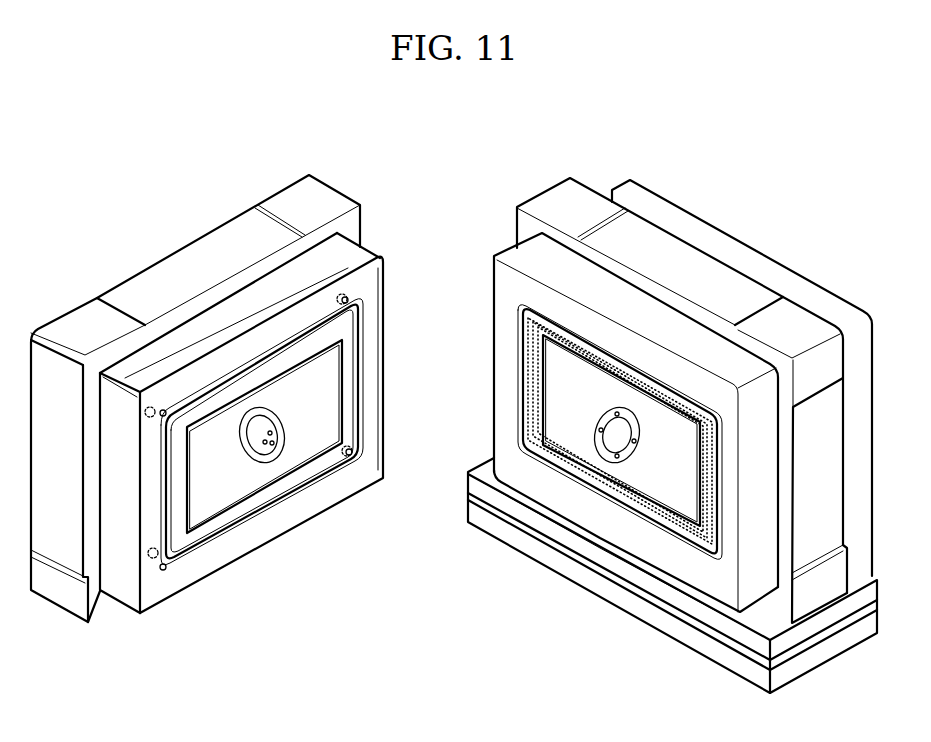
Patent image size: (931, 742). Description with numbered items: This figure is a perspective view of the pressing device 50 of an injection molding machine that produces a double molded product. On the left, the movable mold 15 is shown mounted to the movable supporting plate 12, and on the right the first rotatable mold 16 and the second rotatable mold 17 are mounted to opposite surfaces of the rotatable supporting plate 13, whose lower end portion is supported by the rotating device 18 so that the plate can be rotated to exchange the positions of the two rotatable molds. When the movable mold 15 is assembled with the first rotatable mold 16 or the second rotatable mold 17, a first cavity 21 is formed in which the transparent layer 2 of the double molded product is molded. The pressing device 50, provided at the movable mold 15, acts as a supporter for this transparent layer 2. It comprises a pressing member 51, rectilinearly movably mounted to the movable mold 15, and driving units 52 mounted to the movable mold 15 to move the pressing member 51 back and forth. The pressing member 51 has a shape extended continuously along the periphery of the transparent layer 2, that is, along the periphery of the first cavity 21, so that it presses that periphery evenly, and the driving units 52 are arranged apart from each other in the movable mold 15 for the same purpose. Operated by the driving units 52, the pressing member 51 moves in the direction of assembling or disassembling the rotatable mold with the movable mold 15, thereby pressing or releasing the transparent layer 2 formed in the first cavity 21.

The movable supporting plate 12 is at (178, 268).
The movable mold 15 is at (353, 247).
The pressing member 51 is at (209, 545).
The pressing device 50 is at (165, 569).
The driving units 52 is at (153, 557).
The rotatable supporting plate 13 is at (560, 198).
The first rotatable mold 16 is at (537, 253).
The second rotatable mold 17 is at (653, 210).
The first cavity 21 is at (595, 487).
The transparent layer 2 is at (535, 397).
The rotating device 18 is at (704, 638).